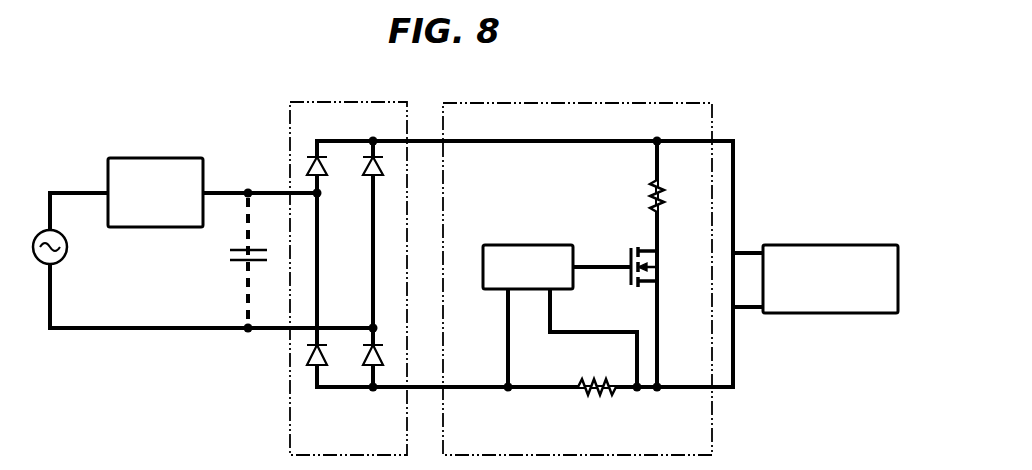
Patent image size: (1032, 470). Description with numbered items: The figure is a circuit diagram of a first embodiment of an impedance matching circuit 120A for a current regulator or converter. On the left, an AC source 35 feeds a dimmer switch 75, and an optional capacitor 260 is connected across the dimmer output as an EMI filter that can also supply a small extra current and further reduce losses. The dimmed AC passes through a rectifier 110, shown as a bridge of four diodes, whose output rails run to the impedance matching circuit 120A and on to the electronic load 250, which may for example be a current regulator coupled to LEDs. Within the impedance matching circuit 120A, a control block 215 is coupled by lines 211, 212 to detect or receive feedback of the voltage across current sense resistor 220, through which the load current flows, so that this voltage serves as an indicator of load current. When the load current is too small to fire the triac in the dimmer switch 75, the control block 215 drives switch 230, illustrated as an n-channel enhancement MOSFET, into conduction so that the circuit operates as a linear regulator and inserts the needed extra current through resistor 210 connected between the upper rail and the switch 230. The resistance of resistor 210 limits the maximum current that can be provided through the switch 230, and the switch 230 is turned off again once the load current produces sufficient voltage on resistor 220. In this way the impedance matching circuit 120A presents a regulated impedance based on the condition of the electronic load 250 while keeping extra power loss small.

The AC power source 35 is at (61, 260).
The dimmer switch 75 is at (128, 158).
The capacitor 260 is at (229, 262).
The rectifier bridge 110 is at (314, 100).
The impedance matching circuit 120A is at (683, 100).
The control block 215 is at (501, 245).
The line 211 is at (504, 356).
The line 212 is at (558, 334).
The current sense resistor 220 is at (598, 398).
The resistor 210 is at (647, 192).
The switch 230 is at (628, 252).
The electronic load 250 is at (856, 245).